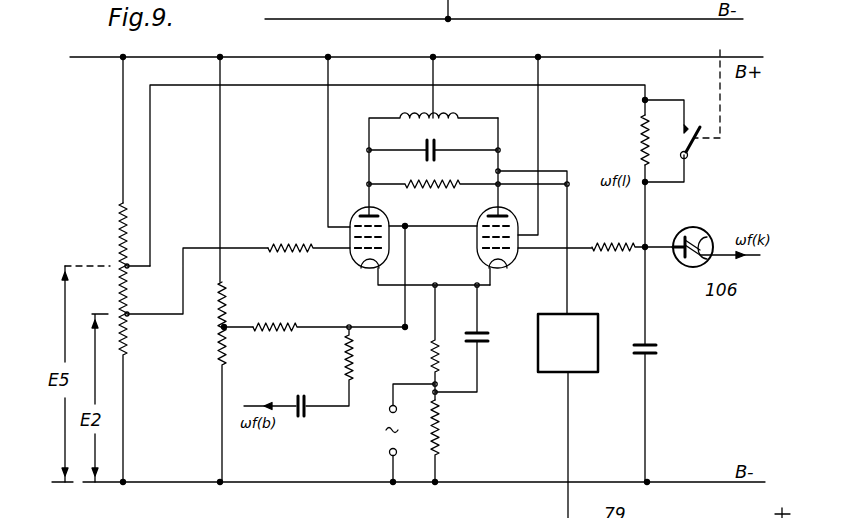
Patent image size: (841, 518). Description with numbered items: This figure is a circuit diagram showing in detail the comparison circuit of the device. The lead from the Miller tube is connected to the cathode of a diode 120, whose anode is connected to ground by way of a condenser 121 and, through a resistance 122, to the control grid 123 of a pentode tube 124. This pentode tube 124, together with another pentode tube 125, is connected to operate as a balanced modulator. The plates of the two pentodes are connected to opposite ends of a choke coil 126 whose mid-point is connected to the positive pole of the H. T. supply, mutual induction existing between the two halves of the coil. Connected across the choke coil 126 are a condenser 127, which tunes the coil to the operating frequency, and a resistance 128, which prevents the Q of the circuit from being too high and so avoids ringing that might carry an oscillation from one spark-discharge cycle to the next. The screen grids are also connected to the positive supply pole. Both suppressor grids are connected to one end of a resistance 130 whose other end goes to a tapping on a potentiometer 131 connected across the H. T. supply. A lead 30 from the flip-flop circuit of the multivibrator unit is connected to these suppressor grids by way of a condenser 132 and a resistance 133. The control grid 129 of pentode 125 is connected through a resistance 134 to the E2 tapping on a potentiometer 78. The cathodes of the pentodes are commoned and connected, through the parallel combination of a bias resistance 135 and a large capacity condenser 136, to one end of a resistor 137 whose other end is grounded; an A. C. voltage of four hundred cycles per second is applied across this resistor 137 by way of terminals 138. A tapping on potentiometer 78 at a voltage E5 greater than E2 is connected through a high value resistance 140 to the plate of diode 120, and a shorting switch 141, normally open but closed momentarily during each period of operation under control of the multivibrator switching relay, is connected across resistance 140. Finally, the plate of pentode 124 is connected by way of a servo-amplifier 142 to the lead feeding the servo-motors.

The potentiometer 78 is at (119, 222).
The potentiometer 131 is at (218, 352).
The resistance 130 is at (268, 327).
The resistance 133 is at (346, 356).
The condenser 132 is at (302, 418).
The lead 30 is at (282, 402).
The resistance 134 is at (292, 240).
The pentode tube 125 is at (382, 212).
The control grid 129 is at (360, 250).
The pentode tube 124 is at (491, 212).
The control grid 123 is at (508, 250).
The choke coil 126 is at (414, 114).
The condenser 127 is at (426, 140).
The resistance 128 is at (438, 181).
The bias resistance 135 is at (431, 350).
The large capacity condenser 136 is at (489, 336).
The resistor 137 is at (440, 422).
The terminals 138 is at (388, 440).
The servo-amplifier 142 is at (546, 374).
The resistance 122 is at (632, 236).
The high value resistance 140 is at (641, 140).
The shorting switch 141 is at (690, 152).
The diode 120 is at (697, 228).
The condenser 121 is at (660, 348).